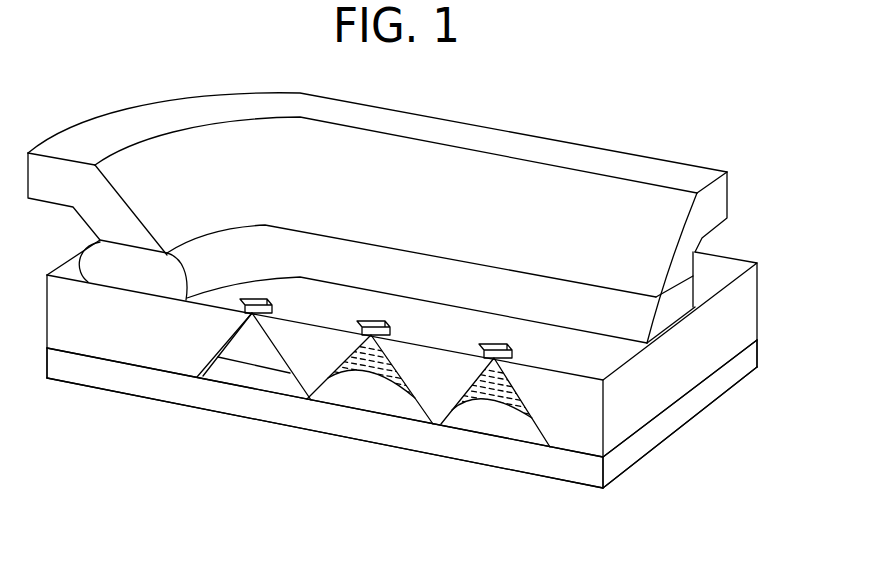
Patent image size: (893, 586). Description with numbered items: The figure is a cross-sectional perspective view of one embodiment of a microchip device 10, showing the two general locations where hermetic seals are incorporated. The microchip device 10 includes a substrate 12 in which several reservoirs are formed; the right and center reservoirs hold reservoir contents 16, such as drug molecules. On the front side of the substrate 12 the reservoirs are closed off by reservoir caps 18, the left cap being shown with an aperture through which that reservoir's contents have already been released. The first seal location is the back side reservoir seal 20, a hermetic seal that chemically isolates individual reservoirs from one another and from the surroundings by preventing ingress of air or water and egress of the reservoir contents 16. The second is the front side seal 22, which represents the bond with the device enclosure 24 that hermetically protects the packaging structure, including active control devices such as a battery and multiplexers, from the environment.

The microchip device 10 is at (622, 124).
The substrate 12 is at (578, 417).
The reservoir contents 16 is at (498, 387).
The reservoir caps 18 is at (273, 302).
The back side reservoir seal 20 is at (113, 373).
The front side seal 22 is at (350, 272).
The device enclosure 24 is at (358, 189).